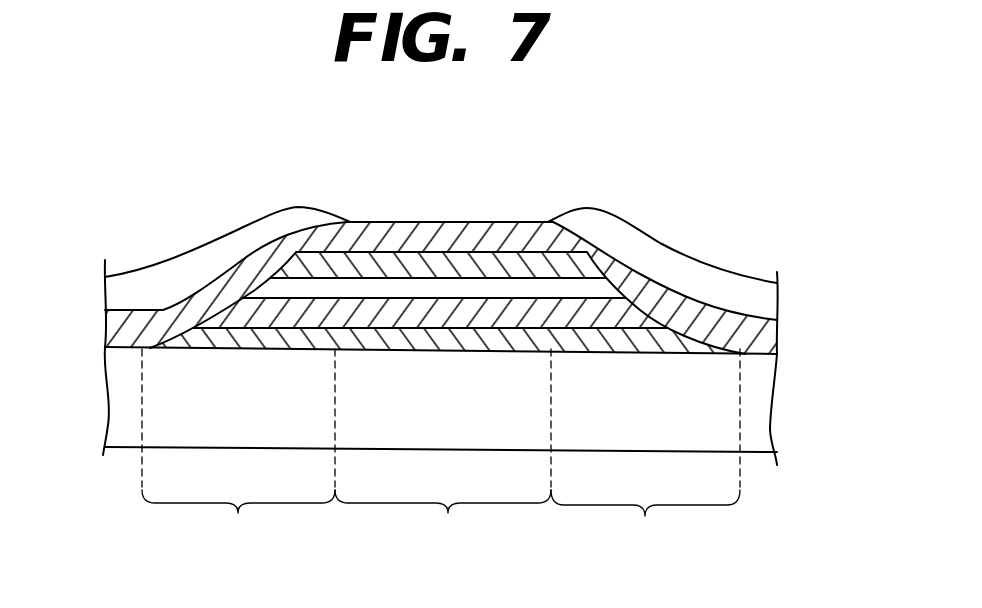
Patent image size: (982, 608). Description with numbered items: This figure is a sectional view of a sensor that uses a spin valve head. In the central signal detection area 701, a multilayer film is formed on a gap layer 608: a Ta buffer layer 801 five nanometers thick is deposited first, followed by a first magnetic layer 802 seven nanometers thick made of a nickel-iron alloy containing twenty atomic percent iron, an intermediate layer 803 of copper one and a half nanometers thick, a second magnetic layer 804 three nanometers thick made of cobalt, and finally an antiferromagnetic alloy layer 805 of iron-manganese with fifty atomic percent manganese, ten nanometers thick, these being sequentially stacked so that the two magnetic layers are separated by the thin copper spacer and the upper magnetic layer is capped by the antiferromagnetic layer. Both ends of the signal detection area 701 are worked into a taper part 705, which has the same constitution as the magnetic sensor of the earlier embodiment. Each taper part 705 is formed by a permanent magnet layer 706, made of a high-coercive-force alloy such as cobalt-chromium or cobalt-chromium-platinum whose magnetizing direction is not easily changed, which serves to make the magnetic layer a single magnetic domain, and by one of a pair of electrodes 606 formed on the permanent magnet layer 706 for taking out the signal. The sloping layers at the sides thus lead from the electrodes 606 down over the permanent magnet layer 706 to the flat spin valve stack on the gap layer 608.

The gap layer 608 is at (760, 390).
The Ta buffer layer 801 is at (538, 338).
The first magnetic layer 802 is at (463, 310).
The intermediate layer 803 is at (437, 290).
The second magnetic layer 804 is at (405, 262).
The antiferromagnetic alloy layer 805 is at (358, 232).
The permanent magnet layer 706 is at (200, 290).
The electrodes 606 is at (224, 238).
The signal detection area 701 is at (443, 522).
The taper part 705 is at (441, 453).